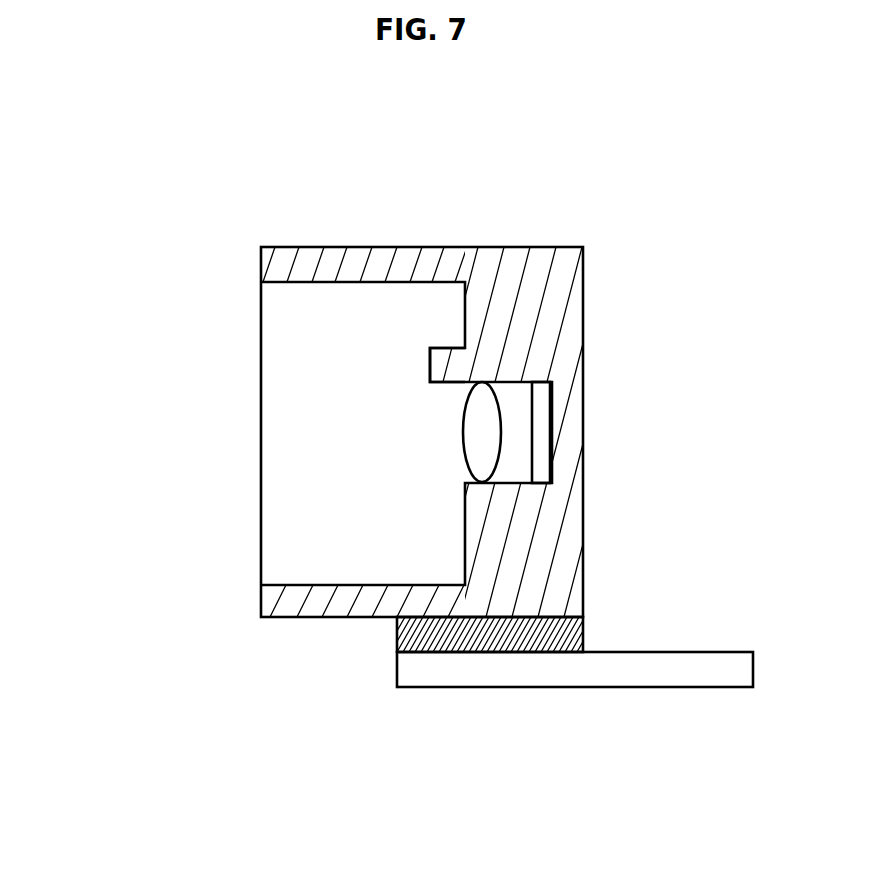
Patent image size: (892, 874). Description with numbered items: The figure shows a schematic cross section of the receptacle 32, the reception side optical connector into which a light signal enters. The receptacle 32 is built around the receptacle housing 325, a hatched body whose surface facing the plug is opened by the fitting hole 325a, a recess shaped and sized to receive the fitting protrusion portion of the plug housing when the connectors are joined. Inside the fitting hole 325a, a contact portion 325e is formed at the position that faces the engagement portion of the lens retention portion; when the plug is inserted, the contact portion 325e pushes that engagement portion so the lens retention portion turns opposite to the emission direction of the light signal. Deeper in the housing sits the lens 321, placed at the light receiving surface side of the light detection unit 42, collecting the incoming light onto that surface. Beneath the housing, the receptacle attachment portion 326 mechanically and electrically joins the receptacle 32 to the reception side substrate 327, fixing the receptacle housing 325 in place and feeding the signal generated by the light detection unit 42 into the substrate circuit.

The receptacle 32 is at (454, 832).
The receptacle housing 325 is at (297, 233).
The fitting hole 325a is at (297, 517).
The contact portion 325e is at (430, 363).
The lens 321 is at (483, 433).
The light detection unit 42 is at (541, 433).
The receptacle attachment portion 326 is at (397, 636).
The reception side substrate 327 is at (673, 650).